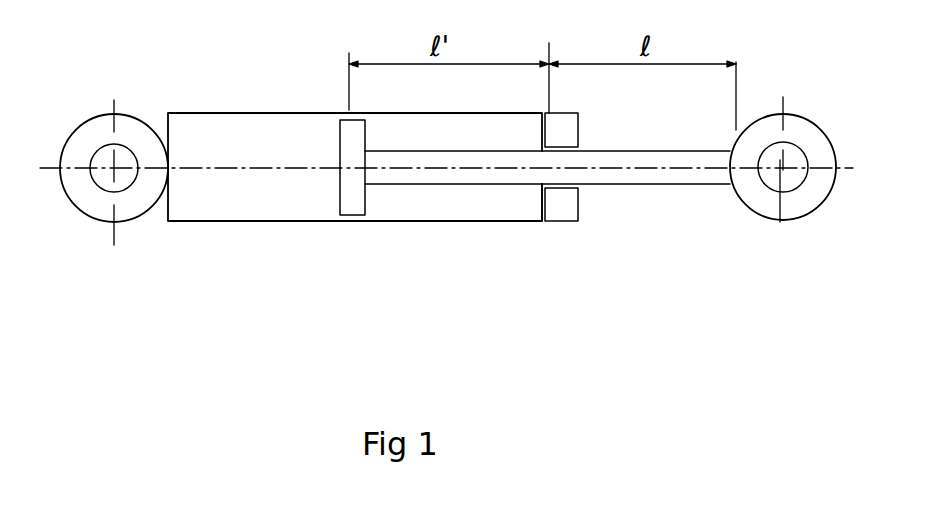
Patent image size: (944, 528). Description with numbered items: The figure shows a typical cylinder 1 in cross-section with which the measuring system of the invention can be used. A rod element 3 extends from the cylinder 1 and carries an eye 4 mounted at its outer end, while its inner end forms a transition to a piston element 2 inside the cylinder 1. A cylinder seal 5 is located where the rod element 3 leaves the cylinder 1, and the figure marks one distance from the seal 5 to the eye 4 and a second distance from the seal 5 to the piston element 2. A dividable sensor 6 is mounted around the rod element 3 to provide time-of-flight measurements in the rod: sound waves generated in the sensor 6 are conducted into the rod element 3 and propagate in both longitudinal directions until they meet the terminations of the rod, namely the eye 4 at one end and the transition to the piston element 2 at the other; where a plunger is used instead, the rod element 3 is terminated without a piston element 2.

The cylinder 1 is at (243, 222).
The piston element 2 is at (353, 137).
The rod element 3 is at (668, 177).
The eye 4 is at (797, 205).
The cylinder seal 5 is at (542, 192).
The dividable sensor 6 is at (563, 207).